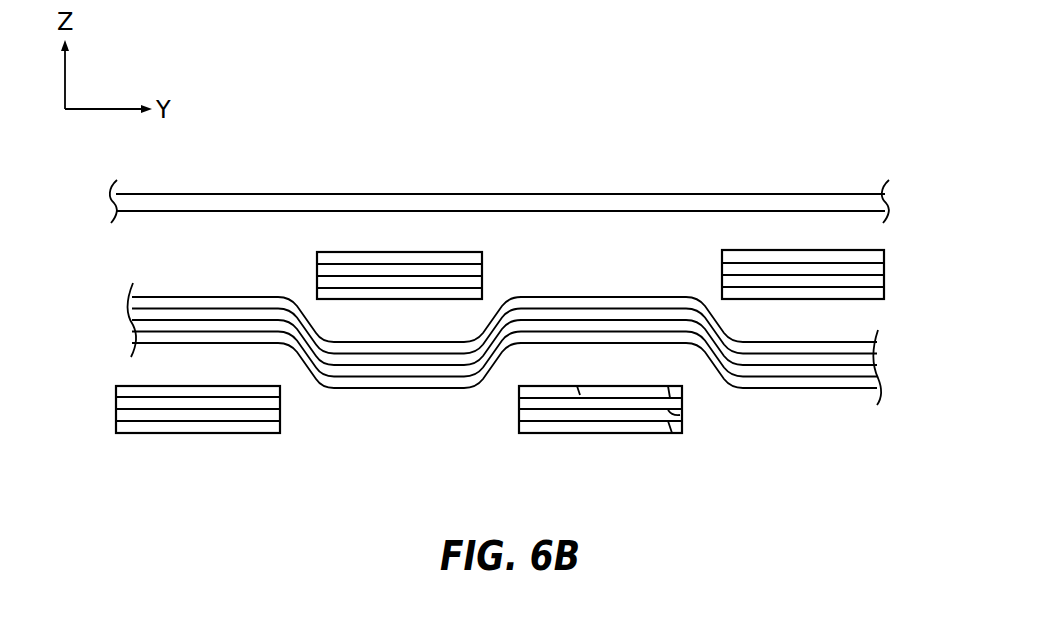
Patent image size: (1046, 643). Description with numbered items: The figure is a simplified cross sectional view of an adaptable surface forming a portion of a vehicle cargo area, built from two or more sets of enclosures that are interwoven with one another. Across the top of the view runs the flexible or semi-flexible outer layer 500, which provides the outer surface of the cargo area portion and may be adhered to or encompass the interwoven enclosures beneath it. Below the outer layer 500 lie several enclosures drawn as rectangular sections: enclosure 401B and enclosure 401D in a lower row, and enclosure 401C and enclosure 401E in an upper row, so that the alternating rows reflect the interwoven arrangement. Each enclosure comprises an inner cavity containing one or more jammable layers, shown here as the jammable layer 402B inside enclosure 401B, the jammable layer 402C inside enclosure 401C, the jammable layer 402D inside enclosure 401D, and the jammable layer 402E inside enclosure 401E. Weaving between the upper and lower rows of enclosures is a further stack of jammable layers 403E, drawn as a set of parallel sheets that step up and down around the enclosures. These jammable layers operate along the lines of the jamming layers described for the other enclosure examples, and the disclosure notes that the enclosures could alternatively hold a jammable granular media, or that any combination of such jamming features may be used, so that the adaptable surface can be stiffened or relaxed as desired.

The outer layer 500 is at (668, 200).
The enclosure 401B is at (202, 433).
The jammable layer 402B is at (237, 415).
The enclosure 401C is at (402, 257).
The jammable layer 402C is at (357, 270).
The enclosure 401D is at (632, 433).
The jammable layer 402D is at (558, 413).
The enclosure 401E is at (808, 258).
The jammable layer 402E is at (848, 277).
The jammable layer 403E is at (378, 369).